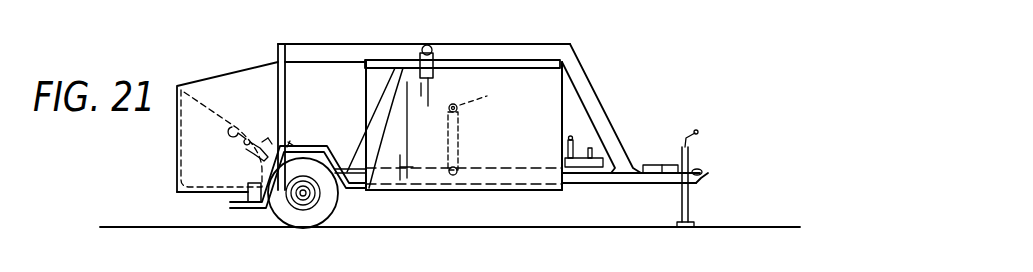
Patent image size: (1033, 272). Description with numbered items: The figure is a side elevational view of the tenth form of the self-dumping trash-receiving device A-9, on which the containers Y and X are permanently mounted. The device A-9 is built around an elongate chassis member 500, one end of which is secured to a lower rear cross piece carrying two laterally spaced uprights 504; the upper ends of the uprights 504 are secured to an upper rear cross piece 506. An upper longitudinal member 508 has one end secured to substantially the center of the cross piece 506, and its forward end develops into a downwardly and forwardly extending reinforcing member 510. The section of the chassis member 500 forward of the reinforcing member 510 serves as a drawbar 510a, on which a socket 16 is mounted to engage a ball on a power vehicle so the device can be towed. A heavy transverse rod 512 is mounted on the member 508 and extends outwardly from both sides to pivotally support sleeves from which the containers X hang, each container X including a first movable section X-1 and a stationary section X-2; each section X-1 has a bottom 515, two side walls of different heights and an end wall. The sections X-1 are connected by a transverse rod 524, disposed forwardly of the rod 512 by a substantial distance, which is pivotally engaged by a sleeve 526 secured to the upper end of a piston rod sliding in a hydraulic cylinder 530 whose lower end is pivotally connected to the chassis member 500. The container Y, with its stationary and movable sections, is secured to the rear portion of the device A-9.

The socket 16 is at (703, 173).
The elongate chassis member 500 is at (350, 188).
The uprights 504 is at (285, 104).
The upper rear cross piece 506 is at (281, 46).
The upper longitudinal member 508 is at (422, 73).
The reinforcing member 510 is at (599, 118).
The drawbar 510a is at (656, 179).
The transverse rod 512 is at (430, 45).
The bottom 515 is at (464, 138).
The transverse rod 524 is at (488, 92).
The sleeve 526 is at (448, 108).
The hydraulic cylinder 530 is at (447, 140).
The tenth form of the device A-9 is at (348, 43).
The container X is at (518, 118).
The first movable section X-1 is at (526, 159).
The stationary section X-2 is at (394, 95).
The container Y is at (212, 161).